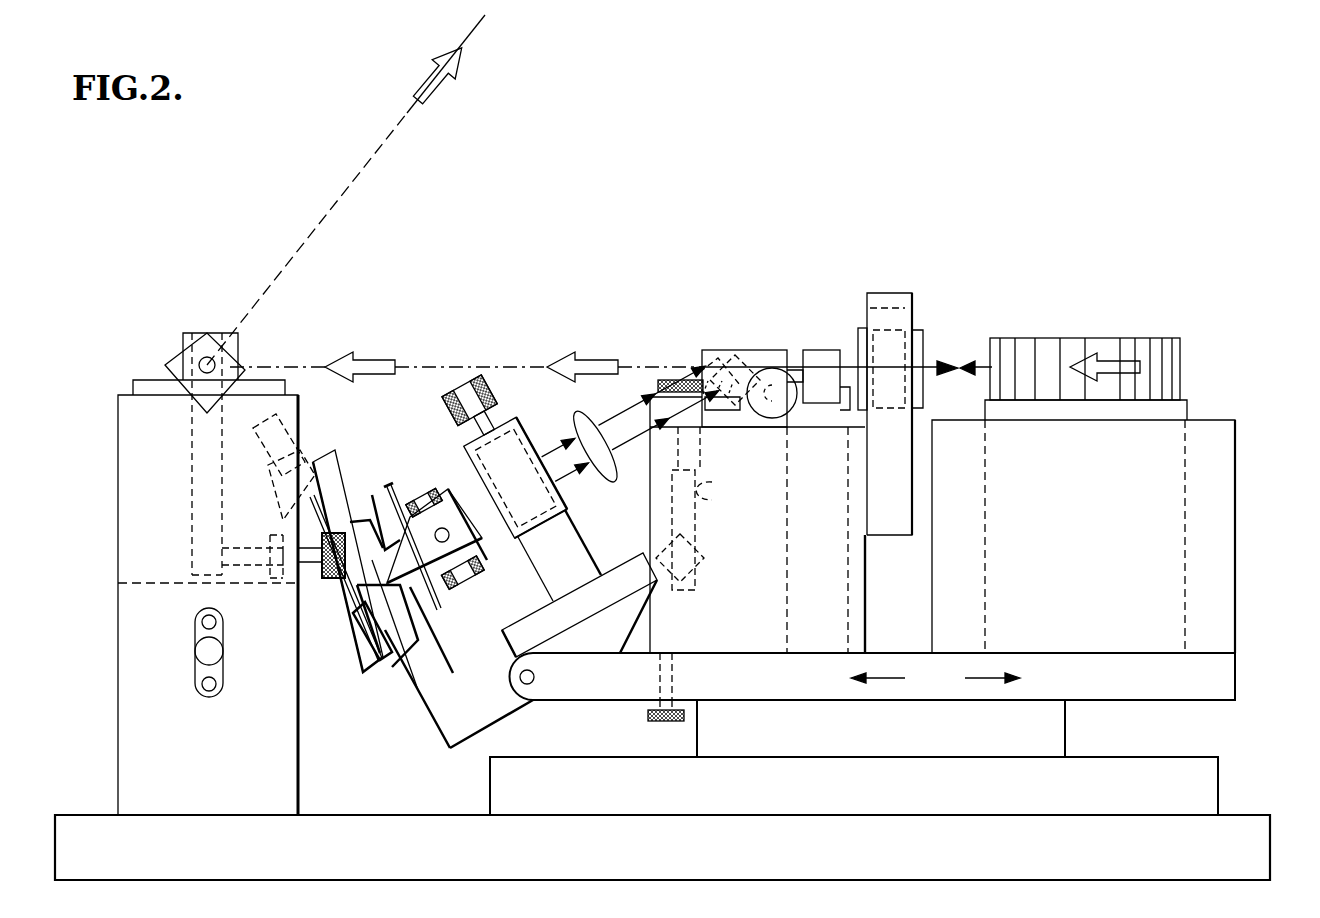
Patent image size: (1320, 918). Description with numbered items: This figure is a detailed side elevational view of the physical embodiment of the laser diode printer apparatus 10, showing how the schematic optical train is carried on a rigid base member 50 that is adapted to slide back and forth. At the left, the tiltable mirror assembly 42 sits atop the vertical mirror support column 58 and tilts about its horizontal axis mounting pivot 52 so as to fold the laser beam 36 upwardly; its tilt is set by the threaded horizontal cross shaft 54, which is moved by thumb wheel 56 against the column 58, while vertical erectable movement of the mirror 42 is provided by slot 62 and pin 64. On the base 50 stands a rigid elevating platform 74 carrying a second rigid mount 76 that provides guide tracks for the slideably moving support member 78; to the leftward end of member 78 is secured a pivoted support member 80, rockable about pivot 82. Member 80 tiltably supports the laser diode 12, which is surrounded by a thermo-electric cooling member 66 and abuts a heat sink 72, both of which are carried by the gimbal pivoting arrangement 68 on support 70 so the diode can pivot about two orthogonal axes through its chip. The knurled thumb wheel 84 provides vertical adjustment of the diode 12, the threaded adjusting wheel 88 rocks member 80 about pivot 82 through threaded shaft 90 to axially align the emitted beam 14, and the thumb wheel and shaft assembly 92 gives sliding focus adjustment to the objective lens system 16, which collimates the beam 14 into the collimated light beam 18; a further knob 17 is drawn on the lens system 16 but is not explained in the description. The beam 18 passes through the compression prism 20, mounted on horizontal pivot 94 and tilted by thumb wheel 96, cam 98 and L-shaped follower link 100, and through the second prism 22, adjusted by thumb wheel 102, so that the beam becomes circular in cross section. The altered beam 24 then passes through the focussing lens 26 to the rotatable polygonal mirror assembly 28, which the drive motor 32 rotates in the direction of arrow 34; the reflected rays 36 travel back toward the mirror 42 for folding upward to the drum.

The laser diode printer apparatus 10 is at (1085, 254).
The laser diode 12 is at (481, 588).
The beam of electromagnetic radiation 14 is at (482, 556).
The lens system 16 is at (567, 512).
The adjustment knob 17 is at (497, 392).
The collimated light beam 18 is at (608, 430).
The optical prism 20 is at (732, 360).
The optical prism 22 is at (810, 350).
The collimated altered beam 24 is at (855, 330).
The focussing lens 26 is at (857, 348).
The rotatable polygonal mirror assembly 28 is at (1180, 340).
The drive motor 32 is at (1155, 585).
The direction arrow 34 is at (1140, 367).
The rays of the reflected beam 36 is at (360, 176).
The tiltable mirror assembly 42 is at (200, 332).
The rigid base member 50 is at (800, 866).
The horizontal axis mounting pivot 52 is at (200, 366).
The threaded horizontal cross shaft 54 is at (260, 565).
The thumb wheel 56 is at (330, 583).
The vertical mirror support column 58 is at (203, 430).
The slot 62 is at (204, 636).
The pin 64 is at (209, 651).
The thermo-electric cooling member 66 is at (443, 615).
The gimbal pivoting arrangement 68 is at (420, 497).
The support 70 is at (446, 520).
The heat sink 72 is at (378, 498).
The rigid elevating platform 74 is at (930, 804).
The second rigid mount 76 is at (920, 749).
The slideably moving support member 78 is at (952, 694).
The pivoted support member 80 is at (632, 641).
The pivot 82 is at (535, 677).
The knurled thumb wheel 84 is at (300, 423).
The threaded adjusting wheel 88 is at (648, 716).
The threaded shaft 90 is at (672, 670).
The thumb wheel and shaft assembly 92 is at (695, 565).
The horizontal pivot 94 is at (730, 370).
The thumb wheel 96 is at (678, 380).
The cam 98 is at (690, 505).
The L-shaped follower link 100 is at (715, 490).
The thumb wheel 102 is at (780, 412).